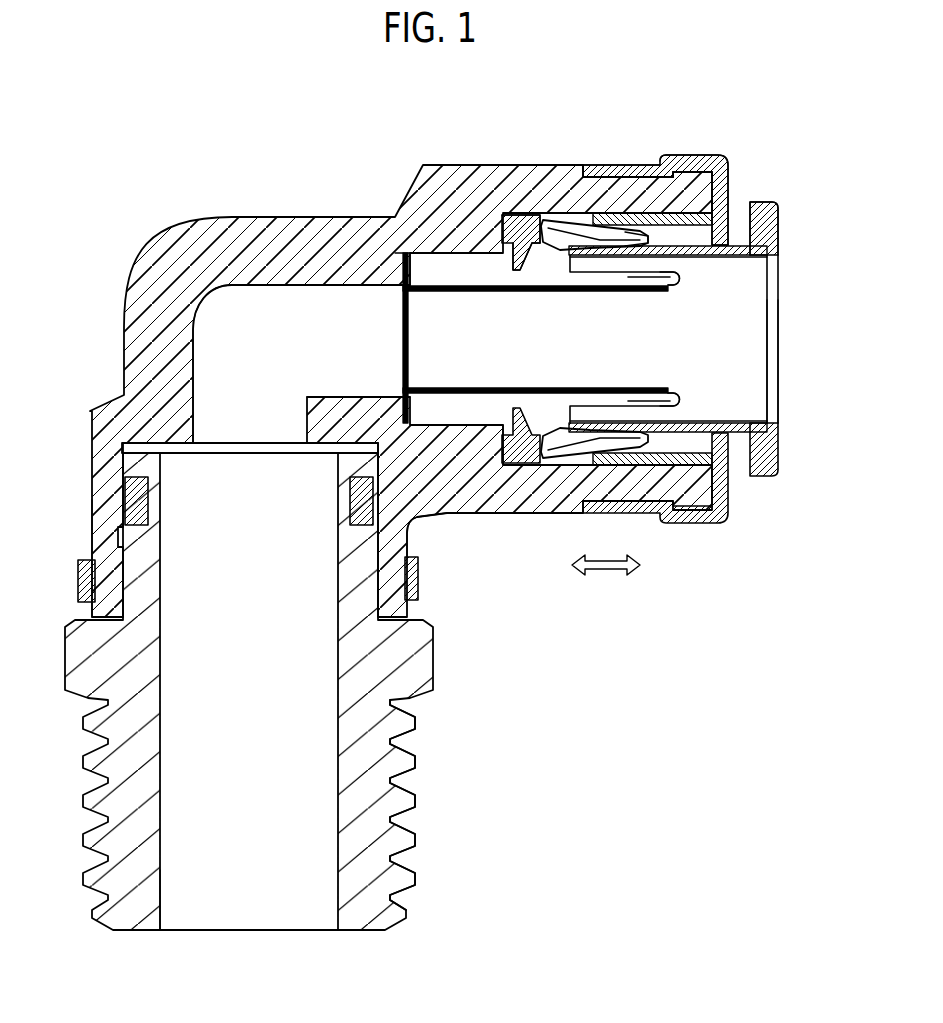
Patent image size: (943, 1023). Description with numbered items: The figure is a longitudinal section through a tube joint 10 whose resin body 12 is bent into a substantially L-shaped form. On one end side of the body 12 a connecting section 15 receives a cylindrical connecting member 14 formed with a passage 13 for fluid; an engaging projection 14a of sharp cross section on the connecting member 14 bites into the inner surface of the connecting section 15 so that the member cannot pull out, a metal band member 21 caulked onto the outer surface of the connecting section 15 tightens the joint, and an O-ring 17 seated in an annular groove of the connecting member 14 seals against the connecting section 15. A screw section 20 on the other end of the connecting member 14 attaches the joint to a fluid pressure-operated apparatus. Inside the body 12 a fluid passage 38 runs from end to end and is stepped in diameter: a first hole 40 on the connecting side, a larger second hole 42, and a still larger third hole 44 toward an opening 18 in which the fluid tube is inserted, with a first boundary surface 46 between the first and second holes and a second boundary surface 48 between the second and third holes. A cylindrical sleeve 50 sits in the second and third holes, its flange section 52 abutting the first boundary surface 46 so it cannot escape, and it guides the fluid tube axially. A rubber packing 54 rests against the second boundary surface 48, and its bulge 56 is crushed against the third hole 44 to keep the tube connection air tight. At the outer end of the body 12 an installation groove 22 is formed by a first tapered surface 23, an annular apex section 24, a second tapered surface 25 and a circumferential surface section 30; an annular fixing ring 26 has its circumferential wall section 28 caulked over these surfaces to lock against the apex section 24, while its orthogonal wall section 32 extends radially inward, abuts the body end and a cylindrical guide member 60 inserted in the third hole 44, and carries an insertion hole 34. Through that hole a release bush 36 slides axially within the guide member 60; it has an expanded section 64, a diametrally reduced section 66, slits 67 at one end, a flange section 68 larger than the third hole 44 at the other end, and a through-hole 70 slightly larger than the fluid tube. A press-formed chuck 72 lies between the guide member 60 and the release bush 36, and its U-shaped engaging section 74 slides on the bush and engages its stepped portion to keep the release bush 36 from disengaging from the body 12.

The tube joint 10 is at (326, 102).
The body 12 is at (436, 162).
The passage 13 is at (163, 890).
The connecting member 14 is at (437, 650).
The engaging projection 14a is at (410, 537).
The connecting section 15 is at (100, 537).
The O-ring 17 is at (130, 498).
The opening 18 is at (728, 478).
The screw section 20 is at (393, 828).
The band member 21 is at (420, 588).
The installation groove 22 is at (618, 170).
The first tapered surface 23 is at (703, 175).
The apex section 24 is at (690, 170).
The second tapered surface 25 is at (661, 162).
The fixing ring 26 is at (733, 170).
The circumferential wall section 28 is at (594, 170).
The circumferential surface section 30 is at (612, 166).
The orthogonal wall section 32 is at (731, 205).
The insertion hole 34 is at (718, 252).
The release bush 36 is at (781, 232).
The fluid passage 38 is at (280, 328).
The first hole 40 is at (400, 284).
The second hole 42 is at (452, 256).
The third hole 44 is at (565, 220).
The first boundary surface 46 is at (408, 413).
The second boundary surface 48 is at (503, 420).
The sleeve 50 is at (615, 294).
The flange section 52 is at (408, 399).
The packing 54 is at (514, 272).
The bulge 56 is at (514, 214).
The guide member 60 is at (722, 200).
The expanded section 64 is at (602, 254).
The diametrally reduced section 66 is at (539, 213).
The slits 67 is at (677, 284).
The flange section 68 is at (780, 455).
The through-hole 70 is at (767, 420).
The chuck 72 is at (555, 272).
The engaging section 74 is at (680, 252).